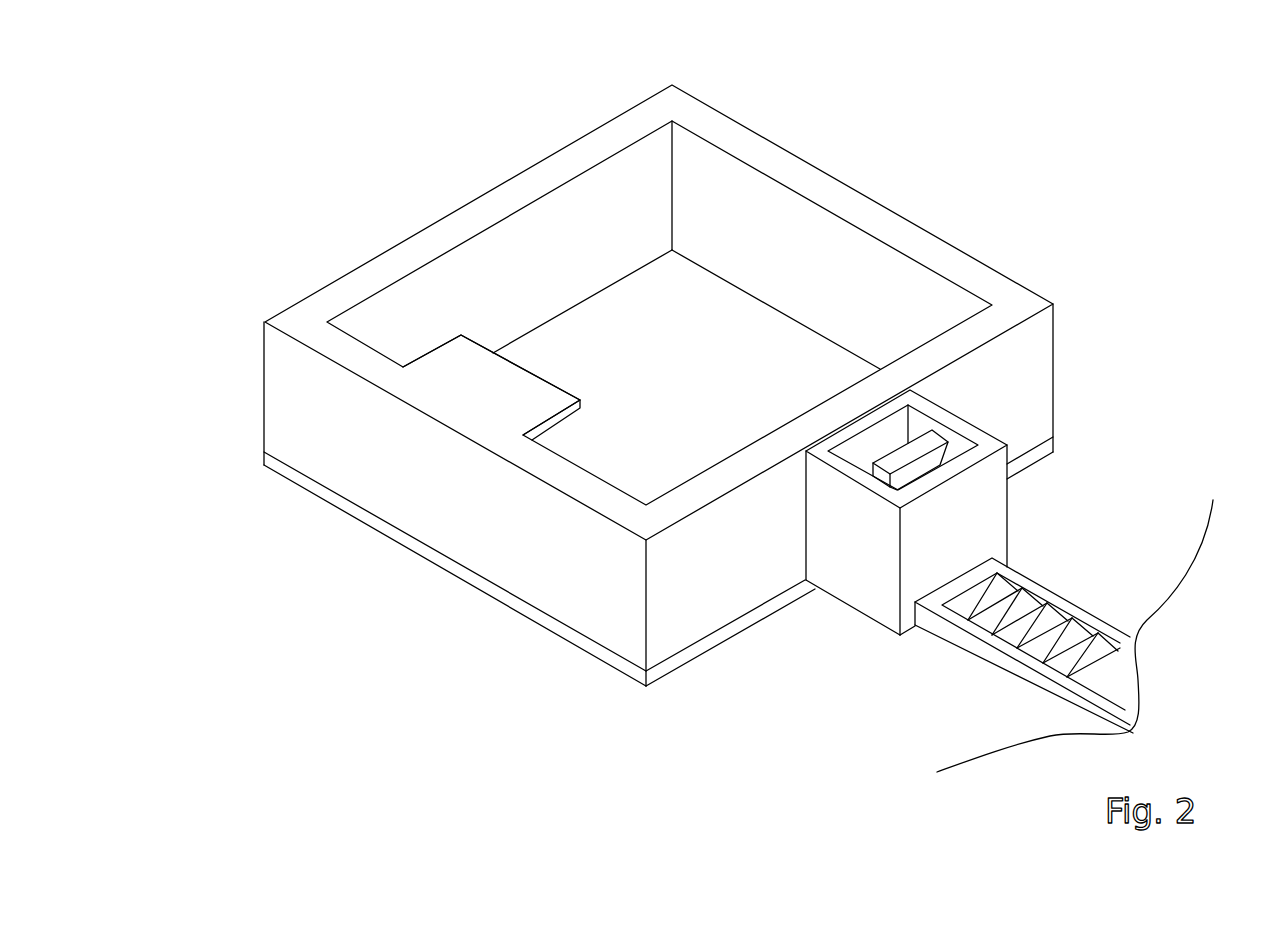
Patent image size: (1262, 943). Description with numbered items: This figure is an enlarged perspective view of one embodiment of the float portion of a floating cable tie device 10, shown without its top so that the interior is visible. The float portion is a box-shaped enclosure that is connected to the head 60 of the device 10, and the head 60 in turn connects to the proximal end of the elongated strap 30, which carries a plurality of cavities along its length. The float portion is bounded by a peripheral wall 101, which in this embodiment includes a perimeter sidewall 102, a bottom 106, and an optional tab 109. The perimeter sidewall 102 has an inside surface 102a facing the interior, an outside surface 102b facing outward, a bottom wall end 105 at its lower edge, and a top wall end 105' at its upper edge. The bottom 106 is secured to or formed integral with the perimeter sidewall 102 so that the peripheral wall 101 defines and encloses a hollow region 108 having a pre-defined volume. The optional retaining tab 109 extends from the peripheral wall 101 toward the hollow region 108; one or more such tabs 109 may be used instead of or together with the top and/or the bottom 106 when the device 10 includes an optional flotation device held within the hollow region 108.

The floating cable tie device 10 is at (310, 178).
The peripheral wall 101 is at (760, 135).
The perimeter sidewall 102 is at (690, 495).
The inside surface 102a is at (681, 241).
The outside surface 102b is at (368, 463).
The bottom wall end 105 is at (626, 554).
The top wall end 105' is at (258, 315).
The bottom 106 is at (517, 607).
The hollow region 108 is at (688, 330).
The tab 109 is at (508, 385).
The head 60 is at (1007, 506).
The strap 30 is at (967, 647).